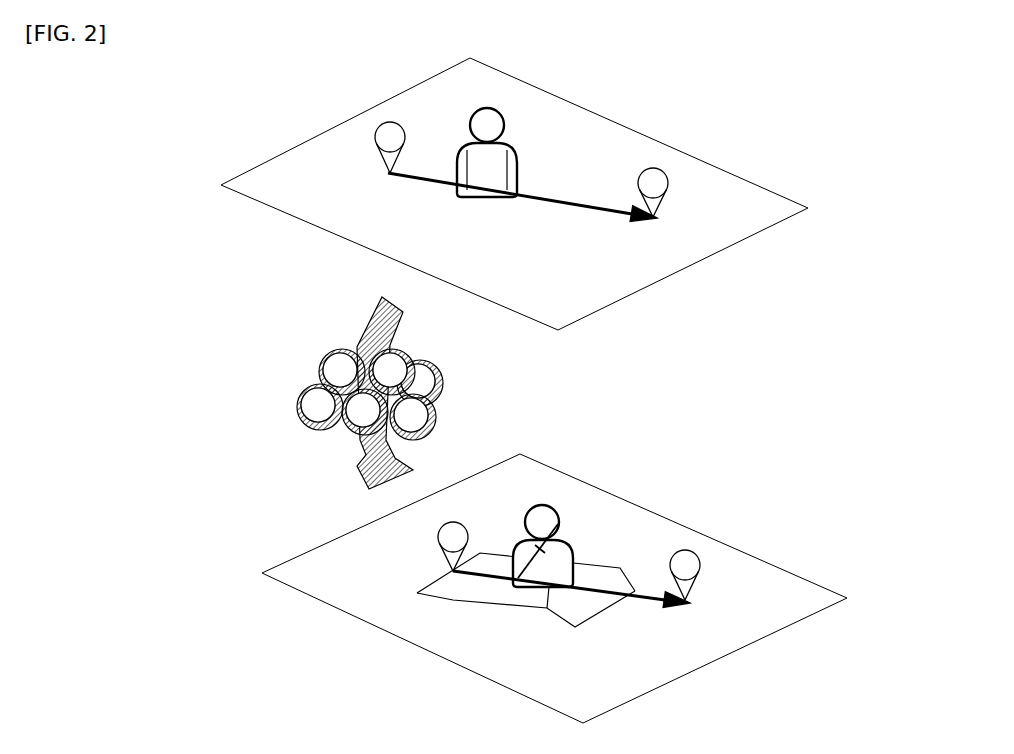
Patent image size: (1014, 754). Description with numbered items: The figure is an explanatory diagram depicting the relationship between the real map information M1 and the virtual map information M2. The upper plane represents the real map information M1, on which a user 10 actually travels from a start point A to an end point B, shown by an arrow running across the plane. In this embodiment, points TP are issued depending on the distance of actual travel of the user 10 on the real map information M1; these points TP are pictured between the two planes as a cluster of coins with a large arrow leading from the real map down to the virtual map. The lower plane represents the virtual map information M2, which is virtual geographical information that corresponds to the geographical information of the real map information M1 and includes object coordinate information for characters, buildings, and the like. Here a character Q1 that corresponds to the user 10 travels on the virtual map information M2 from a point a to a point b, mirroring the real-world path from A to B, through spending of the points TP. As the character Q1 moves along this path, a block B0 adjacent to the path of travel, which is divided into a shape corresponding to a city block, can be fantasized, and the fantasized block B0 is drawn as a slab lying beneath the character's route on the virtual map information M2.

The user 10 is at (504, 113).
The real map information M1 is at (620, 122).
The virtual map information M2 is at (780, 571).
The start point on real map A is at (390, 147).
The end point on real map B is at (653, 192).
The start point on virtual map a is at (453, 546).
The end point on virtual map b is at (685, 575).
The points TP is at (411, 393).
The character Q1 is at (562, 520).
The block B0 is at (455, 593).